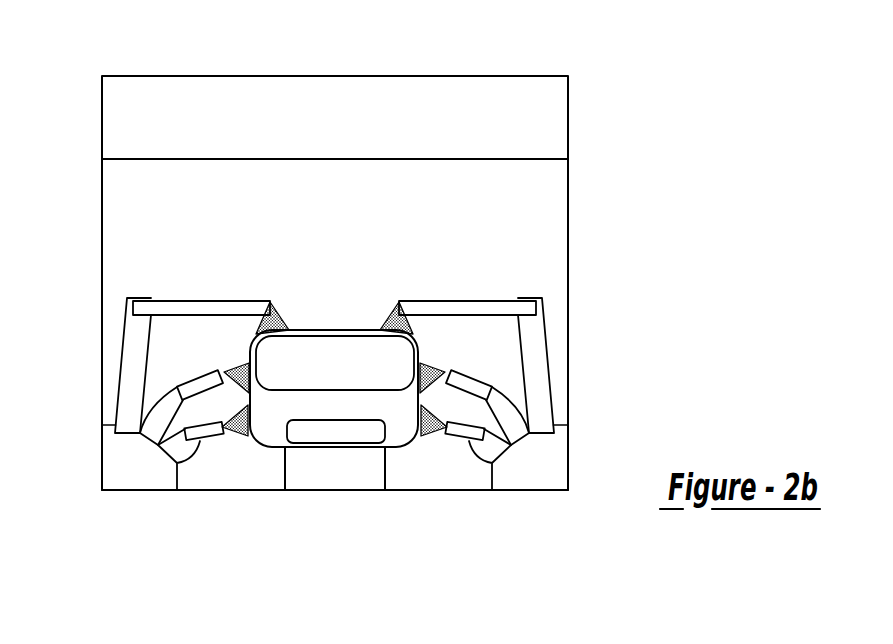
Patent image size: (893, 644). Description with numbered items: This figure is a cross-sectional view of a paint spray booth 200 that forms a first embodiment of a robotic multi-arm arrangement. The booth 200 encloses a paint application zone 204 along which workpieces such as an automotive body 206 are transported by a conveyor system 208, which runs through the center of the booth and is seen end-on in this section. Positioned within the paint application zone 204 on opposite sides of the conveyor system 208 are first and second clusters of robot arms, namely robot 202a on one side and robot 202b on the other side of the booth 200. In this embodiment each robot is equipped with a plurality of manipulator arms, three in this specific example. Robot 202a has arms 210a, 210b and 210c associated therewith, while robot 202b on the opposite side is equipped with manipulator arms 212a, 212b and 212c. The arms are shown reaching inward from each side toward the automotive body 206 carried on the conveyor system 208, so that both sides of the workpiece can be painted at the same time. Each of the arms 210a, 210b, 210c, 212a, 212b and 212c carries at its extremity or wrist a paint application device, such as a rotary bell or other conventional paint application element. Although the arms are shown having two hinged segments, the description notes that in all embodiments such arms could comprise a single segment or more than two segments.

The paint spray booth 200 is at (161, 76).
The first robot 202a is at (85, 478).
The second robot 202b is at (525, 495).
The paint application zone 204 is at (204, 230).
The automotive body 206 is at (344, 378).
The conveyor system 208 is at (285, 470).
The manipulator arm 210a is at (176, 301).
The manipulator arm 210b is at (199, 375).
The manipulator arm 210c is at (205, 442).
The manipulator arm 212a is at (437, 300).
The manipulator arm 212b is at (478, 380).
The manipulator arm 212c is at (457, 437).